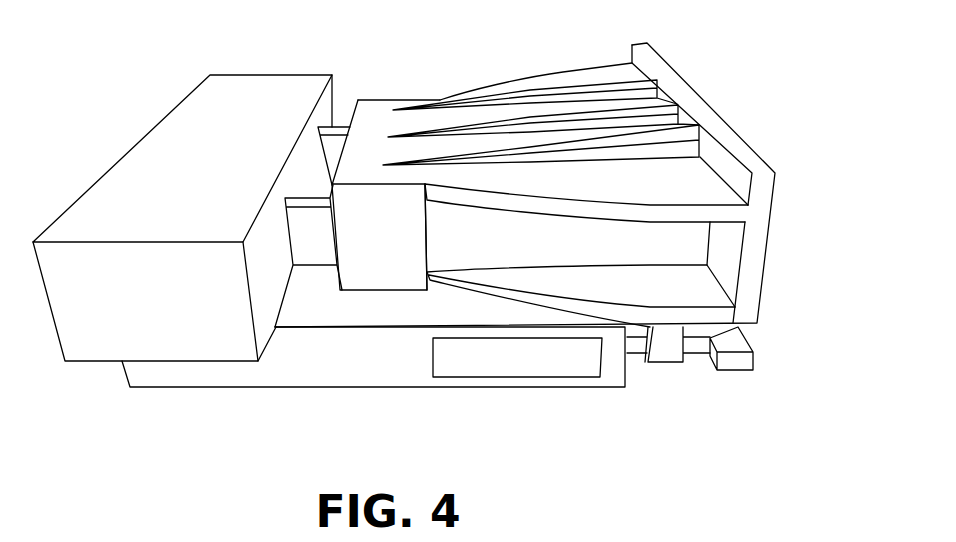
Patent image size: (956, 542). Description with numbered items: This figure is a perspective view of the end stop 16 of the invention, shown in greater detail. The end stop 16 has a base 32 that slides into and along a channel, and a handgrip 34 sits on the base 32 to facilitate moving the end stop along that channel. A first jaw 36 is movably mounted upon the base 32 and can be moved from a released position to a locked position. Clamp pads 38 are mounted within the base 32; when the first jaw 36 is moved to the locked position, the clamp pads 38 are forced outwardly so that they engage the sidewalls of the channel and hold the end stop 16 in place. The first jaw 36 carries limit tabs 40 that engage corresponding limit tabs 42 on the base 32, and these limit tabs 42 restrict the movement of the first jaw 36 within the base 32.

The end stop 16 is at (112, 86).
The base 32 is at (138, 377).
The handgrip 34 is at (267, 90).
The first jaw 36 is at (550, 88).
The clamp pads 38 is at (457, 365).
The limit tabs 40 is at (660, 360).
The limit tabs 42 is at (747, 363).